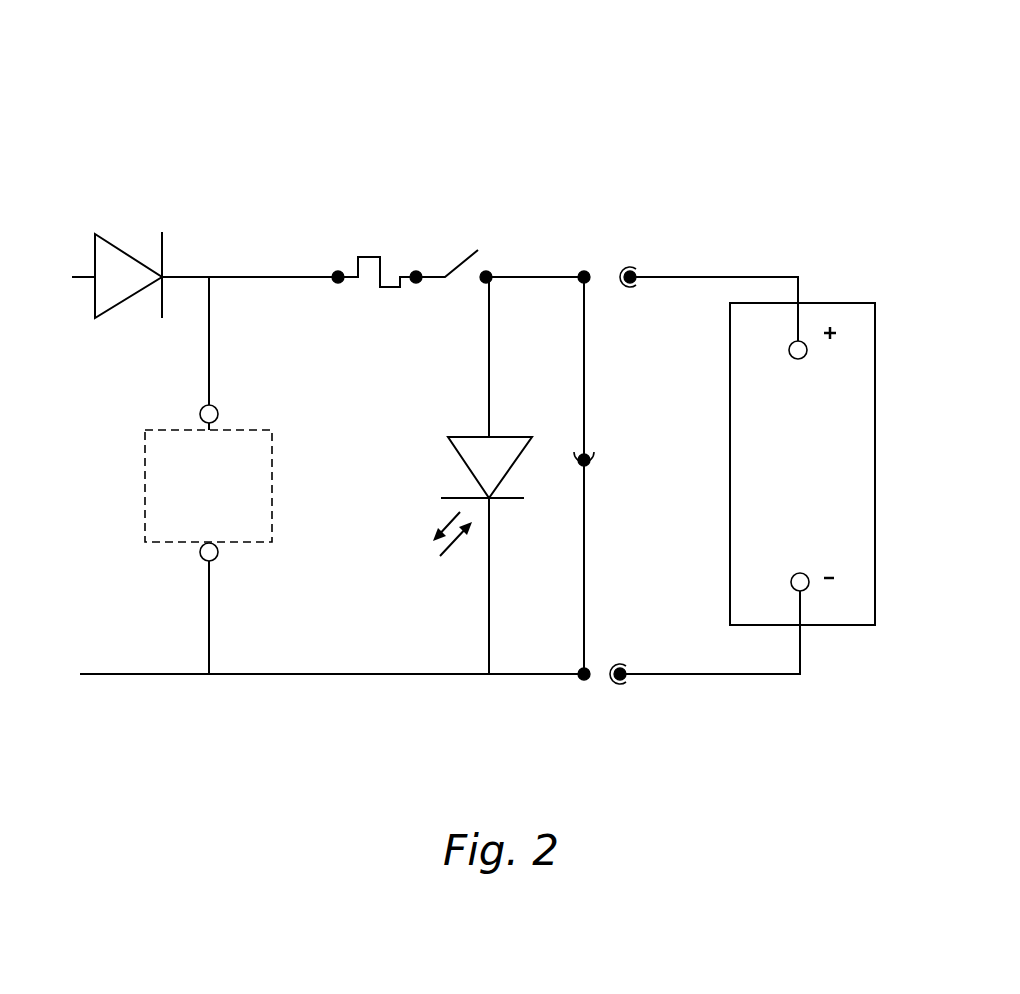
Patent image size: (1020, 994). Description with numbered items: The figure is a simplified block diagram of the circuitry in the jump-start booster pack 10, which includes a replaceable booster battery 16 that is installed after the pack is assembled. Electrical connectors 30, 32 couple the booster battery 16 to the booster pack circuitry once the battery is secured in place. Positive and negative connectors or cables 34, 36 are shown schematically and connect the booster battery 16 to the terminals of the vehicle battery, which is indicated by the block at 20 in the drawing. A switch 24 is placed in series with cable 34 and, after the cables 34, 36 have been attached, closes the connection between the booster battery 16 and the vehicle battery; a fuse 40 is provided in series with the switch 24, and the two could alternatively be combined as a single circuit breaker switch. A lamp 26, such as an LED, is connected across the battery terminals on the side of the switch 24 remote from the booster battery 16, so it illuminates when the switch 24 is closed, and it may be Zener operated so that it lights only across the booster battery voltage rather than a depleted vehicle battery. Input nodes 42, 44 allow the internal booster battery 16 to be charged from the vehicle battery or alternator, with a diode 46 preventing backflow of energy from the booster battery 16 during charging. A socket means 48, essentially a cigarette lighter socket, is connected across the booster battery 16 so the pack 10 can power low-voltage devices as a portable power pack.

The jump-start booster pack 10 is at (486, 140).
The booster battery 16 is at (208, 486).
The connector terminals 20 is at (584, 270).
The switch 24 is at (458, 262).
The lamp 26 is at (455, 453).
The electrical connector 30 is at (216, 408).
The electrical connector 32 is at (218, 556).
The positive connector or cable 34 is at (700, 277).
The negative connector or cable 36 is at (860, 302).
The fuse 40 is at (360, 255).
The input node 42 is at (76, 277).
The input node 44 is at (83, 677).
The diode 46 is at (121, 248).
The socket means 48 is at (592, 454).